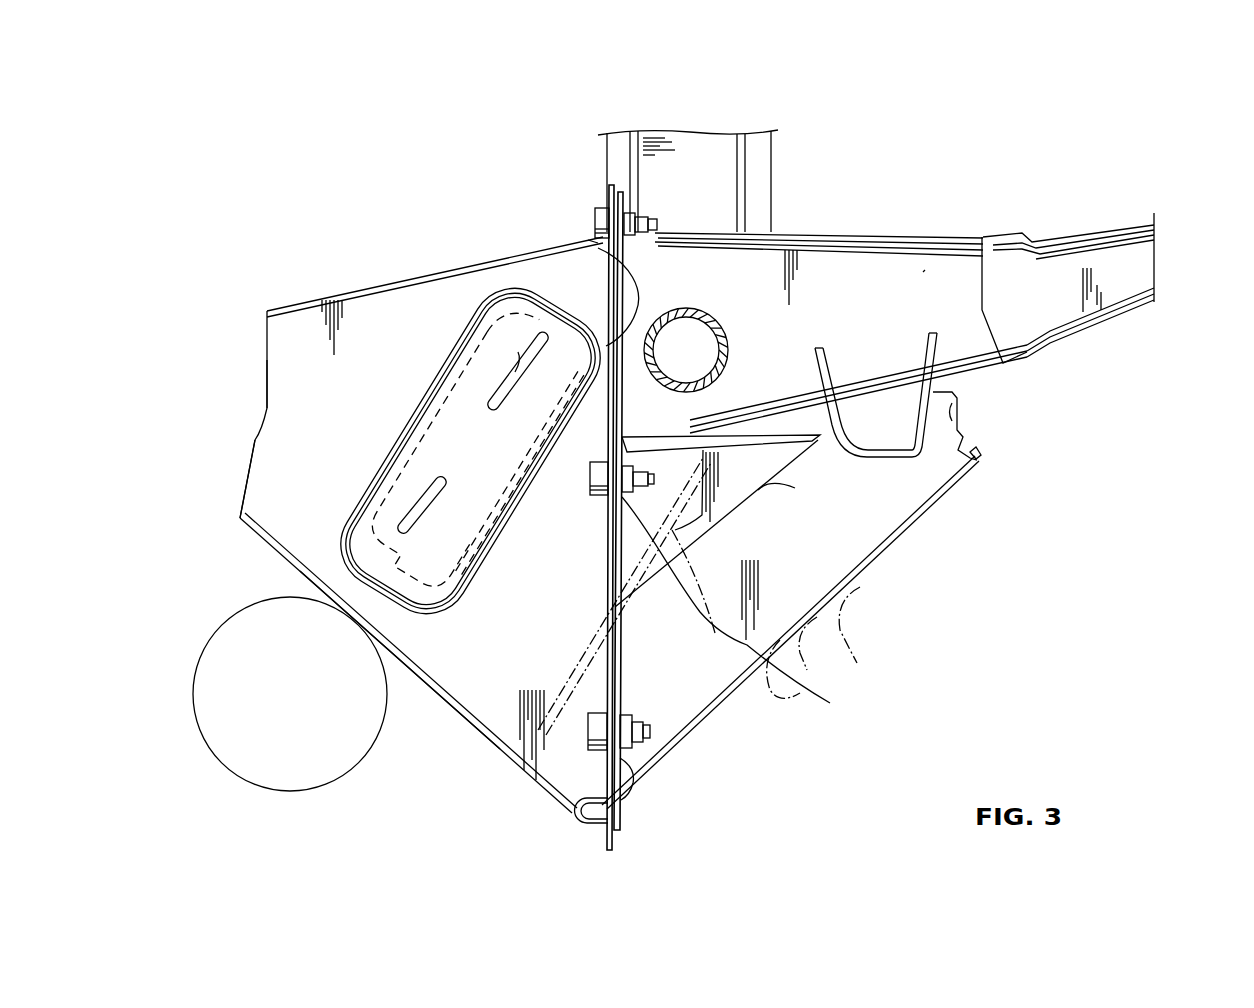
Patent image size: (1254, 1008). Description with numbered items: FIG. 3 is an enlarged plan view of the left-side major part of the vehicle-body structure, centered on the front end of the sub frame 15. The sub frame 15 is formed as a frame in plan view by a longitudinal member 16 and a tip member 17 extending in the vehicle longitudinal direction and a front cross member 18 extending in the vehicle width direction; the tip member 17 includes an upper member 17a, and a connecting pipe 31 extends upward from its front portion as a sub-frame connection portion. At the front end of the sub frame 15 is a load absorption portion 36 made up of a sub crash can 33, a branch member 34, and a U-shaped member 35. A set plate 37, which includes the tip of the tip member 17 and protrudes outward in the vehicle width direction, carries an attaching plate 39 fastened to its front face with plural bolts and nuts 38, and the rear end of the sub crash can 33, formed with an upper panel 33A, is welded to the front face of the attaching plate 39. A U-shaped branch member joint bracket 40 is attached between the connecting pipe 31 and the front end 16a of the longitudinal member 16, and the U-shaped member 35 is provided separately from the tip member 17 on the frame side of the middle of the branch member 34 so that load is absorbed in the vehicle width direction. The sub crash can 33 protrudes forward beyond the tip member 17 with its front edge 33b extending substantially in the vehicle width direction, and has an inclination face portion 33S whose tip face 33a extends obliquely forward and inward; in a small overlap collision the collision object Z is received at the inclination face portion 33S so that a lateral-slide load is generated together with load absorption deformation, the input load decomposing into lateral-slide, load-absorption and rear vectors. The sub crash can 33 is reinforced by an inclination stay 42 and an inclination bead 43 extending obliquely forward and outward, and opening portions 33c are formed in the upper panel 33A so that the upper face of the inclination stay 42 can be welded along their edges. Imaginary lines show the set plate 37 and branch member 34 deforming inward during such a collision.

The sub frame 15 is at (1032, 364).
The longitudinal member 16 is at (1070, 234).
The front end of the longitudinal member 16a is at (982, 300).
The tip member 17 is at (881, 235).
The upper member 17a is at (923, 272).
The front cross member 18 is at (771, 153).
The connecting pipe 31 is at (727, 338).
The sub crash can 33 is at (371, 284).
The upper panel 33A is at (267, 477).
The tip face 33a is at (238, 518).
The front edge 33b is at (590, 241).
The inclination face portion 33S is at (455, 713).
The opening portion 33c is at (513, 370).
The branch member 34 is at (870, 566).
The U-shaped member 35 is at (760, 435).
The load absorption portion 36 is at (531, 790).
The set plate 37 is at (620, 650).
The bolts and nuts 38 is at (596, 225).
The attaching plate 39 is at (607, 538).
The branch member joint bracket 40 is at (868, 462).
The inclination stay 42 is at (455, 370).
The inclination bead 43 is at (397, 410).
The collision object Z is at (193, 690).